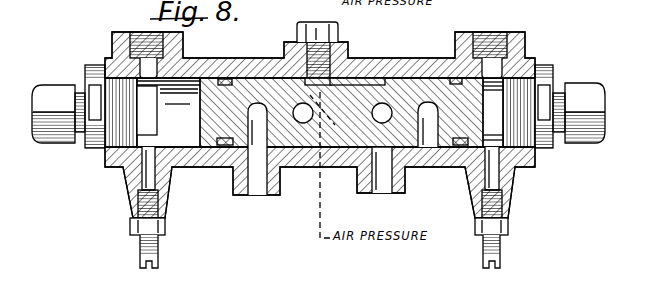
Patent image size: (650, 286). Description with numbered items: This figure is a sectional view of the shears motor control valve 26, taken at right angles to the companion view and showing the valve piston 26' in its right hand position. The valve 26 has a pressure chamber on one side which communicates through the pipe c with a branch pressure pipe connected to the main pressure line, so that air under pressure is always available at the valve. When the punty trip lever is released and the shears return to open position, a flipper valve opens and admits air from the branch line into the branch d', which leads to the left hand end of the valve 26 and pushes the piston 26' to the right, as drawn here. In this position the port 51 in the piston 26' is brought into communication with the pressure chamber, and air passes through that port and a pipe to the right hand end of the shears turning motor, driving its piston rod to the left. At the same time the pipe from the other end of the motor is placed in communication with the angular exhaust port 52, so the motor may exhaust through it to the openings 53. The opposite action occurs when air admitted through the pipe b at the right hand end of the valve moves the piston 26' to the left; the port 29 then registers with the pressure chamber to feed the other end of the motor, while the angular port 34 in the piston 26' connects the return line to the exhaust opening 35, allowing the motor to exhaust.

The branch pipe d' is at (120, 55).
The port 29 is at (293, 100).
The pipe c is at (335, 81).
The valve 26 is at (320, 55).
The port 51 is at (384, 105).
The pipe b is at (500, 70).
The angular exhaust port 52 is at (232, 160).
The valve piston 26' is at (341, 135).
The openings 53 is at (259, 190).
The exhaust opening 35 is at (385, 192).
The angular port 34 is at (432, 160).